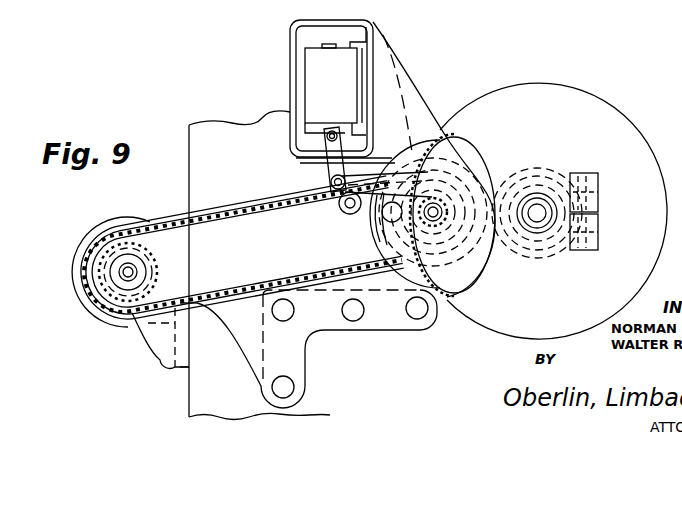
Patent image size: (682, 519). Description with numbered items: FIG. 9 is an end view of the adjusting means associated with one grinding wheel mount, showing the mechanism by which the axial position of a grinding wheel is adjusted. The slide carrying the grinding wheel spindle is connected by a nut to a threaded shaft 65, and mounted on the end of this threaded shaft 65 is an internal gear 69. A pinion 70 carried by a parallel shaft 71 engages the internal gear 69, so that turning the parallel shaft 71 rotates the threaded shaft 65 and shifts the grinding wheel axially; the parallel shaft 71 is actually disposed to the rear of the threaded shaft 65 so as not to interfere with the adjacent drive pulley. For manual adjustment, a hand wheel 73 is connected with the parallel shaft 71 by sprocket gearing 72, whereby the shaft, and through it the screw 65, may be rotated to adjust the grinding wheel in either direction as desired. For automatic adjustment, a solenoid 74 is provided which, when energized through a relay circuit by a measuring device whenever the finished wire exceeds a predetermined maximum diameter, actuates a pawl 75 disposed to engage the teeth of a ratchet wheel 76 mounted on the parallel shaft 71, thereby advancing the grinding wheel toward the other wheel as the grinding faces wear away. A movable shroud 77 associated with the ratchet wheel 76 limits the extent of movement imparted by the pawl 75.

The threaded shaft 65 is at (543, 193).
The internal gear 69 is at (622, 125).
The pinion 70 is at (448, 290).
The parallel shaft 71 is at (456, 195).
The sprocket gearing 72 is at (157, 258).
The hand wheel 73 is at (85, 246).
The solenoid 74 is at (307, 72).
The pawl 75 is at (333, 172).
The ratchet wheel 76 is at (404, 108).
The movable shroud 77 is at (384, 210).